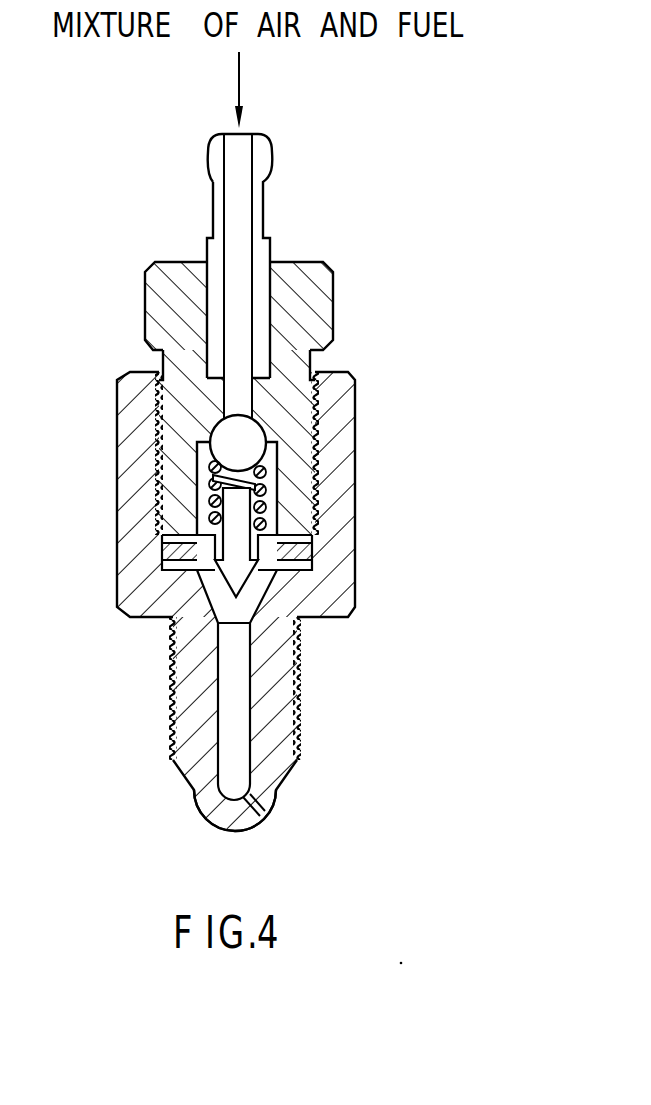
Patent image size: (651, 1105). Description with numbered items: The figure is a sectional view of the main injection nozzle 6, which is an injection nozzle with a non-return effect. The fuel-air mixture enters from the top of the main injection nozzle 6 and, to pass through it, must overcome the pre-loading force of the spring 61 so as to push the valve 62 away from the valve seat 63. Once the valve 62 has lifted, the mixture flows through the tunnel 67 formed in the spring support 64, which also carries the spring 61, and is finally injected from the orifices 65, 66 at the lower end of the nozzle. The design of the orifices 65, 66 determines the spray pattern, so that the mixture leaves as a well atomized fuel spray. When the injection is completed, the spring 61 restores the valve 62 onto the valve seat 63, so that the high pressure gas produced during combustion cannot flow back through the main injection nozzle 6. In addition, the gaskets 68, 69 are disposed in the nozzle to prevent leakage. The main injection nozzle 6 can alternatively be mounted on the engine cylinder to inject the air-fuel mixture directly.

The main injection nozzle 6 is at (452, 716).
The spring 61 is at (267, 488).
The valve 62 is at (327, 402).
The valve seat 63 is at (243, 443).
The spring support 64 is at (305, 558).
The orifice 65 is at (212, 807).
The orifice 66 is at (262, 817).
The tunnel 67 is at (200, 552).
The gasket 68 is at (165, 567).
The gasket 69 is at (302, 537).